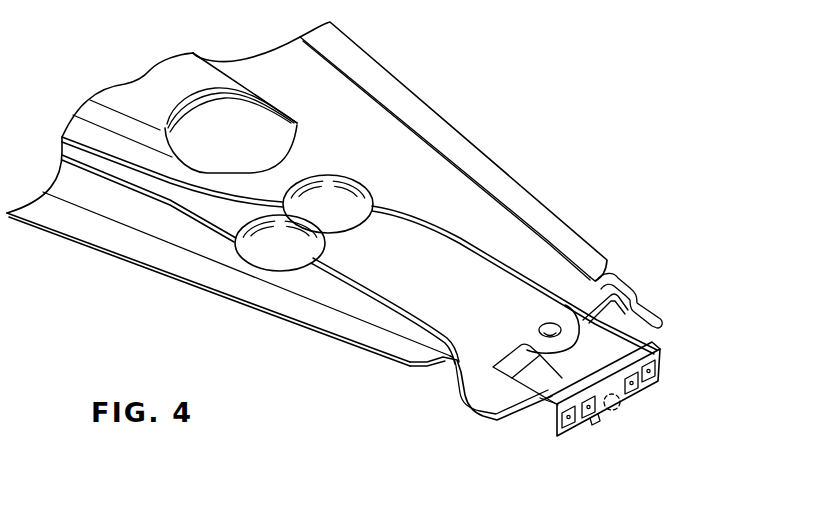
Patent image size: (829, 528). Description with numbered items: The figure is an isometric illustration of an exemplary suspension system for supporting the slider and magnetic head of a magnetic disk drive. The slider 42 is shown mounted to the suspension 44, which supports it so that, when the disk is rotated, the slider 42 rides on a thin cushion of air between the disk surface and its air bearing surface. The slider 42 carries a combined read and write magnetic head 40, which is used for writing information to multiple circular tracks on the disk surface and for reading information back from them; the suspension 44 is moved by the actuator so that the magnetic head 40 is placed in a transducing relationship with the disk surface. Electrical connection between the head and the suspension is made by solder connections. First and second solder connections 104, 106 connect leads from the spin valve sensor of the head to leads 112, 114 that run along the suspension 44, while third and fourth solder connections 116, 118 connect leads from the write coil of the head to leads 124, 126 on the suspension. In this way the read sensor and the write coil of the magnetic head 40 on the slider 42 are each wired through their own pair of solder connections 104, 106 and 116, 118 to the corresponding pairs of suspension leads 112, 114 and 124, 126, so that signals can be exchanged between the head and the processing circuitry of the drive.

The magnetic head 40 is at (617, 407).
The slider 42 is at (512, 425).
The suspension 44 is at (470, 140).
The first solder connection 104 is at (551, 430).
The second solder connection 106 is at (655, 366).
The lead 112 is at (348, 284).
The lead 114 is at (531, 262).
The third solder connection 116 is at (583, 420).
The fourth solder connection 118 is at (633, 389).
The lead 124 is at (392, 297).
The lead 126 is at (447, 235).